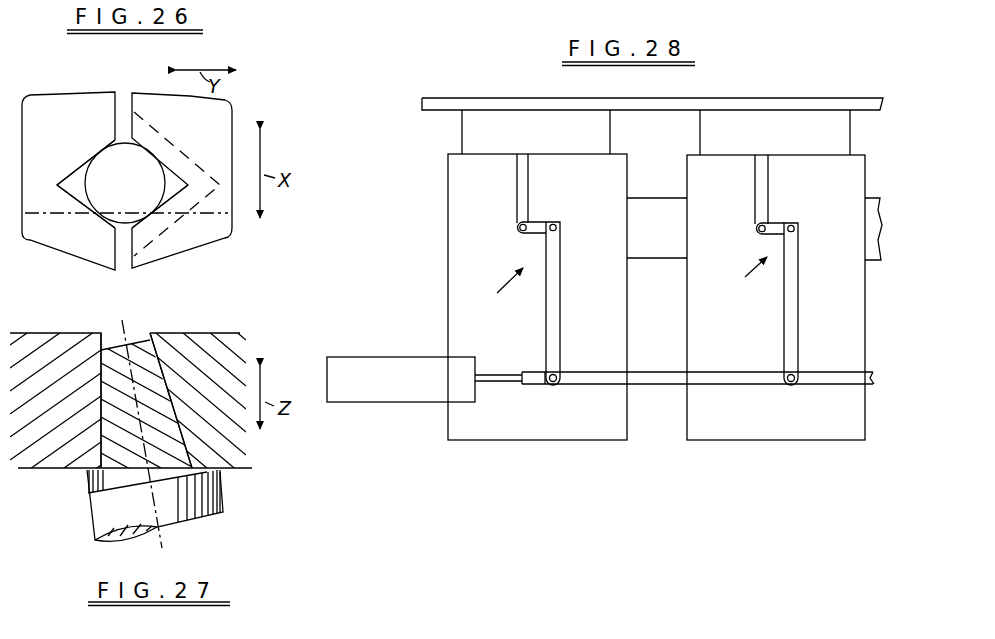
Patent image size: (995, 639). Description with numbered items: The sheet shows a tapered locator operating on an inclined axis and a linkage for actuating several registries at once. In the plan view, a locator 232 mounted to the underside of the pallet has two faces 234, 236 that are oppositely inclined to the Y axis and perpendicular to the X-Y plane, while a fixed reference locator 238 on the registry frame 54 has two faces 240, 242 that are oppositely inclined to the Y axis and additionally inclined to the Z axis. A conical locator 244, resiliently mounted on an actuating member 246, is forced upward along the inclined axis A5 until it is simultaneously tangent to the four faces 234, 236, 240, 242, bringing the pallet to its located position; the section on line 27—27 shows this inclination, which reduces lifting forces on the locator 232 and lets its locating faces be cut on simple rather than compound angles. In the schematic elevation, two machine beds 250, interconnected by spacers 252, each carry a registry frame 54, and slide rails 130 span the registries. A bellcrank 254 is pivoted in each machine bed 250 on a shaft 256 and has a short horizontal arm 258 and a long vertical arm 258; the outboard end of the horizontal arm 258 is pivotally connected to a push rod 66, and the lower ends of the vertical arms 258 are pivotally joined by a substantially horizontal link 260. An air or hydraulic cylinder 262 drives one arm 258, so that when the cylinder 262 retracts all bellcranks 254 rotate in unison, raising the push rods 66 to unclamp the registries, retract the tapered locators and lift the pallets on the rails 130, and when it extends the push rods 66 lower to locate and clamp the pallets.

In FIG. 26, the section line 27— 27 is at (38, 218).
In FIG. 26, the locator 232 is at (62, 100).
In FIG. 27, the locator 232 is at (22, 470).
In FIG. 26, the face 234 is at (68, 198).
In FIG. 27, the face 234 is at (101, 330).
In FIG. 26, the face 236 is at (92, 157).
In FIG. 26, the fixed reference locator 238 is at (232, 233).
In FIG. 27, the fixed reference locator 238 is at (217, 352).
In FIG. 26, the face 240 is at (142, 225).
In FIG. 27, the face 240 is at (140, 333).
In FIG. 26, the face 242 is at (165, 165).
In FIG. 26, the conical locator 244 is at (150, 186).
In FIG. 27, the conical locator 244 is at (123, 475).
In FIG. 27, the actuating member 246 is at (223, 510).
In FIG. 27, the inclined axis A5 is at (160, 537).
In FIG. 28, the slide rails 130 is at (420, 104).
In FIG. 28, the registry frame 54 is at (462, 134).
In FIG. 28, the push rod 66 is at (528, 195).
In FIG. 28, the machine bed 250 is at (462, 230).
In FIG. 28, the spacer 252 is at (652, 195).
In FIG. 28, the bellcrank 254 is at (612, 285).
In FIG. 28, the shaft 256 is at (555, 222).
In FIG. 28, the arm 258 is at (537, 232).
In FIG. 28, the link 260 is at (668, 382).
In FIG. 28, the air or hydraulic cylinder 262 is at (388, 340).